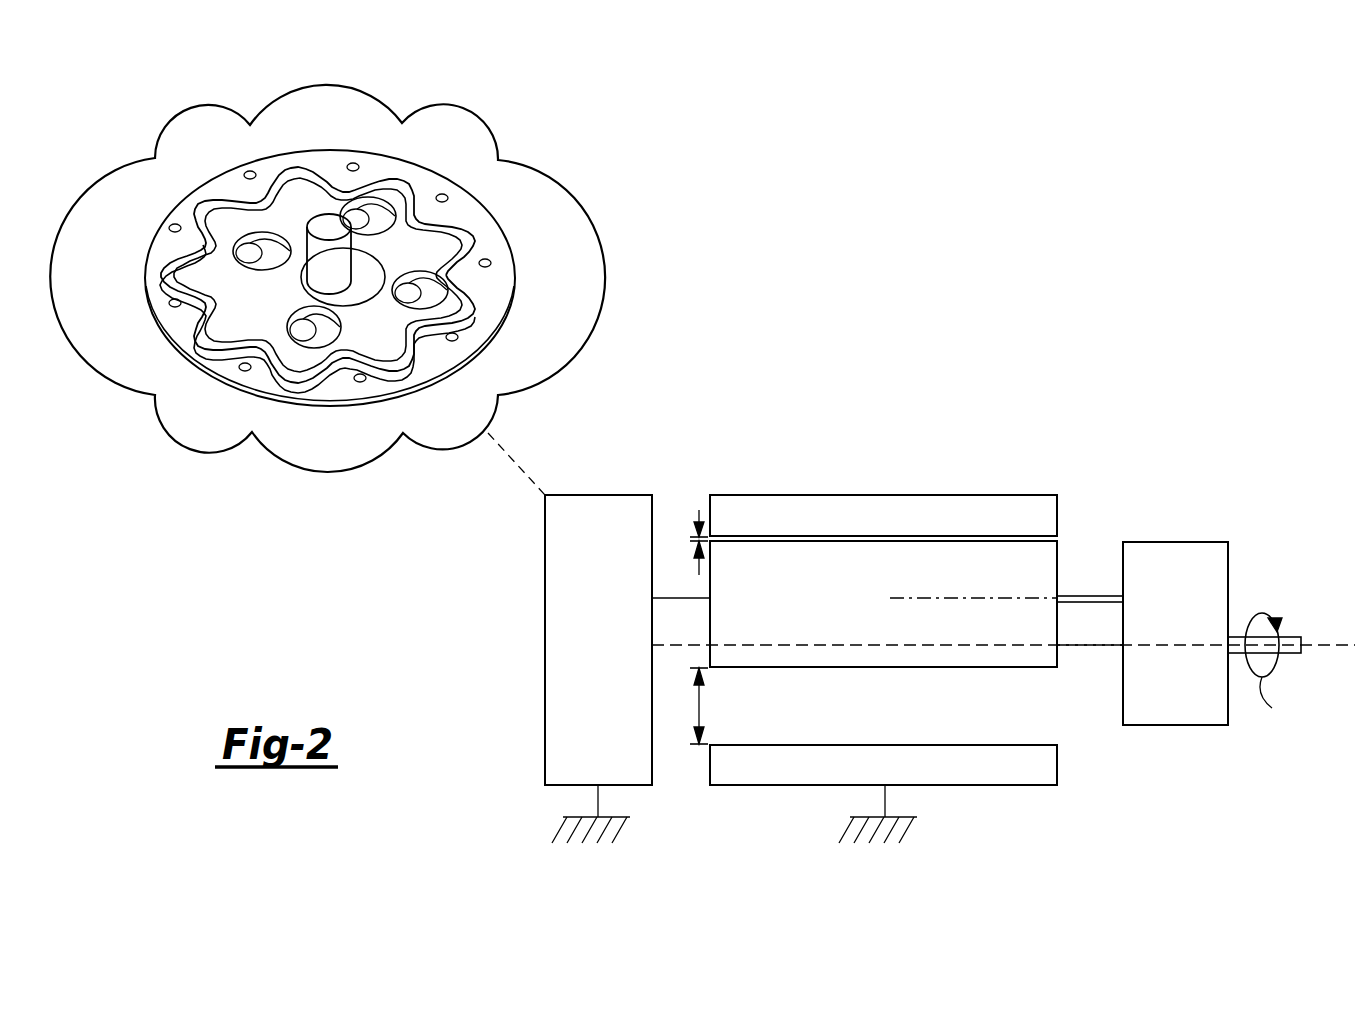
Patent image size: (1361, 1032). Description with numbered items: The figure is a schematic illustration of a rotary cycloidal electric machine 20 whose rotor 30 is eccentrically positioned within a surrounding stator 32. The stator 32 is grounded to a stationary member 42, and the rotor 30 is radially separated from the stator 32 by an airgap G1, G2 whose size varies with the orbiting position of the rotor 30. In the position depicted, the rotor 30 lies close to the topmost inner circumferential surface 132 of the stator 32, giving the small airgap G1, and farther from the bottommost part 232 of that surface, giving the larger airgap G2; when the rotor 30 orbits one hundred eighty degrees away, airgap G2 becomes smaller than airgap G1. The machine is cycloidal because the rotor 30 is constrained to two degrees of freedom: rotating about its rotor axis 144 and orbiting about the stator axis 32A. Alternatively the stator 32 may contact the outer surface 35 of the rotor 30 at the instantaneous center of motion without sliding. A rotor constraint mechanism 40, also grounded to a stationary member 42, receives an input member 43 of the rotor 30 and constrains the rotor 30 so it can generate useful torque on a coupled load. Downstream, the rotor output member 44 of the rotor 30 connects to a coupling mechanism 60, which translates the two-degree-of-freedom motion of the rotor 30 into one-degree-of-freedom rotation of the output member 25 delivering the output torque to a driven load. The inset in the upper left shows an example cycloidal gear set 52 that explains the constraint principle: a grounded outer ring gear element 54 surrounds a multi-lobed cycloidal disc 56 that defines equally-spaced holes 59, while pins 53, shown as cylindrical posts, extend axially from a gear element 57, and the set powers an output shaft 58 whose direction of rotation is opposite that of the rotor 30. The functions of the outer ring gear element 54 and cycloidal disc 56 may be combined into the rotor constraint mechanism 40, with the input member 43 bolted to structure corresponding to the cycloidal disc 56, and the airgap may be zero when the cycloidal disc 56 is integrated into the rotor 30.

The rotary cycloidal electric machine 20 is at (1045, 374).
The output member 25 is at (1290, 637).
The rotor 30 is at (803, 608).
The stator 32 is at (932, 628).
The stator axis 32A is at (1083, 652).
The outer surface of the rotor 35 is at (948, 667).
The rotor constraint mechanism 40 is at (545, 583).
The stationary member 42 is at (563, 827).
The input member 43 is at (684, 597).
The rotor output member 44 is at (1090, 596).
The cycloidal gear set 52 is at (565, 162).
The pins 53 is at (272, 352).
The outer ring gear element 54 is at (237, 178).
The cycloidal disc 56 is at (222, 312).
The gear element 57 is at (430, 293).
The output shaft 58 is at (329, 228).
The equally-spaced holes 59 is at (360, 358).
The coupling mechanism 60 is at (1192, 542).
The inner circumferential surface 132 is at (1050, 537).
The rotor axis 144 is at (945, 598).
The bottommost part of the inner circumferential surface 232 is at (1032, 745).
The airgap G1 is at (700, 510).
The airgap G2 is at (696, 706).